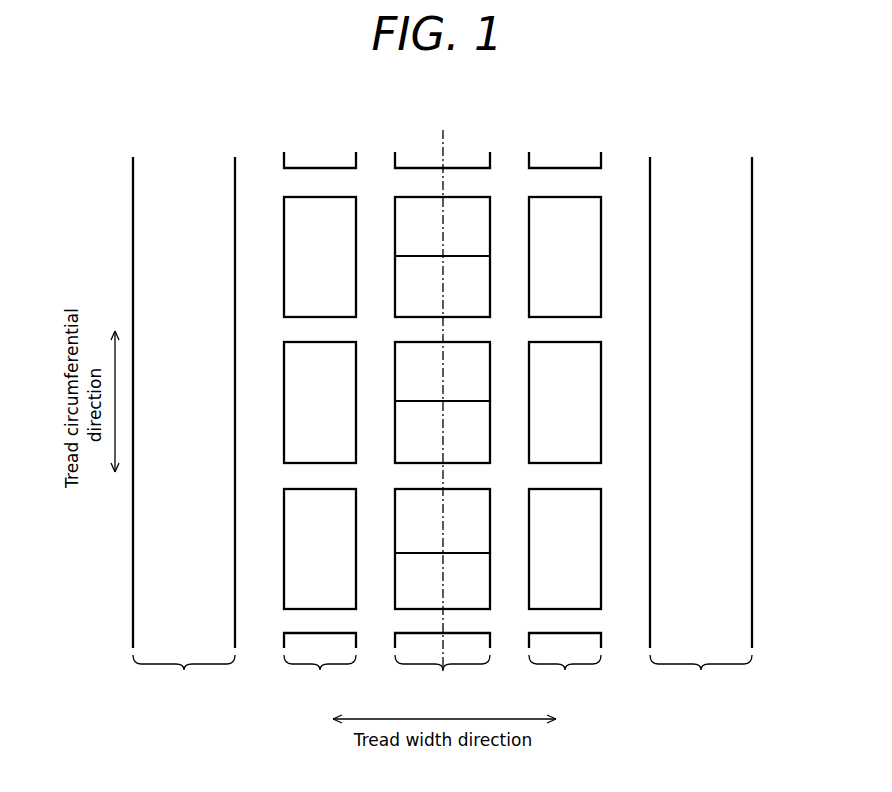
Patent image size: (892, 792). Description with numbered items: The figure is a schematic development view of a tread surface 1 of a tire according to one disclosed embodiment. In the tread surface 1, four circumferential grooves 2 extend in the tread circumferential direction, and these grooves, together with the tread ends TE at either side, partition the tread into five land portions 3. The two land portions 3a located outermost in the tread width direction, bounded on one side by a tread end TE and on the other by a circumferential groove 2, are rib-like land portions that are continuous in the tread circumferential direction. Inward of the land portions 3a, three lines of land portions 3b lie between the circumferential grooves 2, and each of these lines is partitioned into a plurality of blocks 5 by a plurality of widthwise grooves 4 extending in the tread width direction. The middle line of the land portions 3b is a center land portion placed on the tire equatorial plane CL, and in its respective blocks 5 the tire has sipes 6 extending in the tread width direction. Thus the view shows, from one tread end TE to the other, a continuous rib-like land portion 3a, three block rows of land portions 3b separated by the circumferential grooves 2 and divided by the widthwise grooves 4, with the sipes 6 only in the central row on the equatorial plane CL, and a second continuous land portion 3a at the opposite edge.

The tread surface 1 is at (572, 106).
The circumferential groove 2 is at (260, 183).
The land portion 3 is at (442, 662).
The land portion 3a is at (445, 691).
The land portion 3b is at (443, 691).
The widthwise groove 4 is at (582, 181).
The block 5 is at (302, 254).
The sipe 6 is at (474, 255).
The tread end TE is at (133, 224).
The tire equatorial plane CL is at (443, 389).